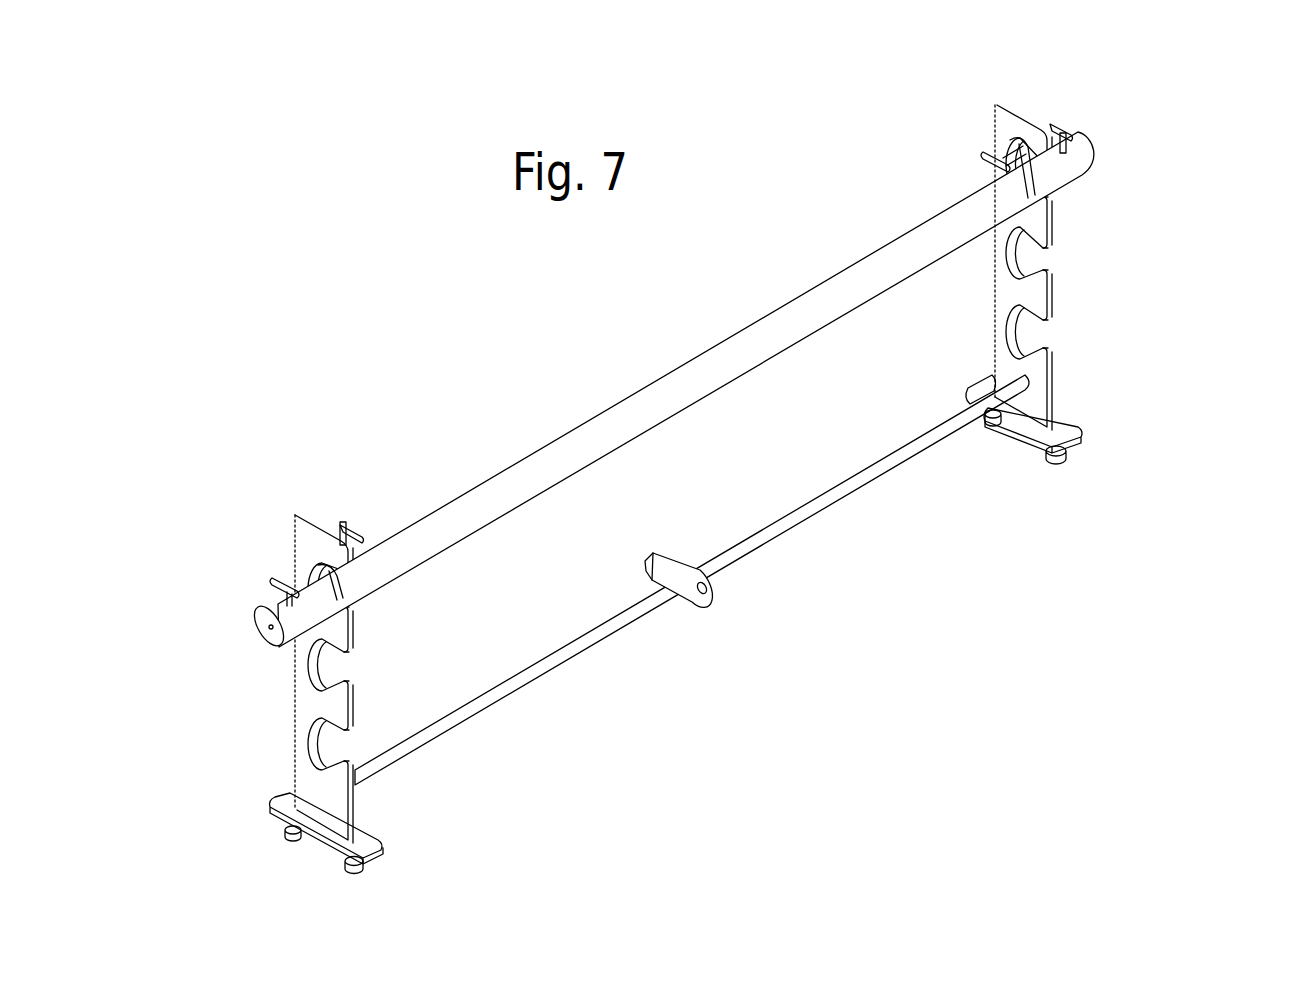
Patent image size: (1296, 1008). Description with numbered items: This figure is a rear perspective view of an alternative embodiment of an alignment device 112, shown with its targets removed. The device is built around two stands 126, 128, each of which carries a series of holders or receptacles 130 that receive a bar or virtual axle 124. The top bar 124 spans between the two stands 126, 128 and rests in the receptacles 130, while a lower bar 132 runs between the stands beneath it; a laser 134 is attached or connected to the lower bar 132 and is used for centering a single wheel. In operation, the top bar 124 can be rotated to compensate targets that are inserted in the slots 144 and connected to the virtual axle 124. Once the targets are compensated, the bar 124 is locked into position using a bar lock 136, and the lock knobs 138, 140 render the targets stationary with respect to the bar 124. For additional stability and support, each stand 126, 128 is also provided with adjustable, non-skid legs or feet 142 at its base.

The alignment device 112 is at (687, 462).
The bar or virtual axle 124 is at (585, 445).
The stand 126 is at (1040, 302).
The stand 128 is at (308, 702).
The holders or receptacles 130 is at (332, 670).
The lower bar 132 is at (470, 712).
The laser 134 is at (676, 578).
The bar lock 136 is at (347, 523).
The lock knob 138 is at (283, 585).
The lock knob 140 is at (1066, 132).
The adjustable, non-skid legs or feet 142 is at (362, 868).
The slots 144 is at (257, 633).